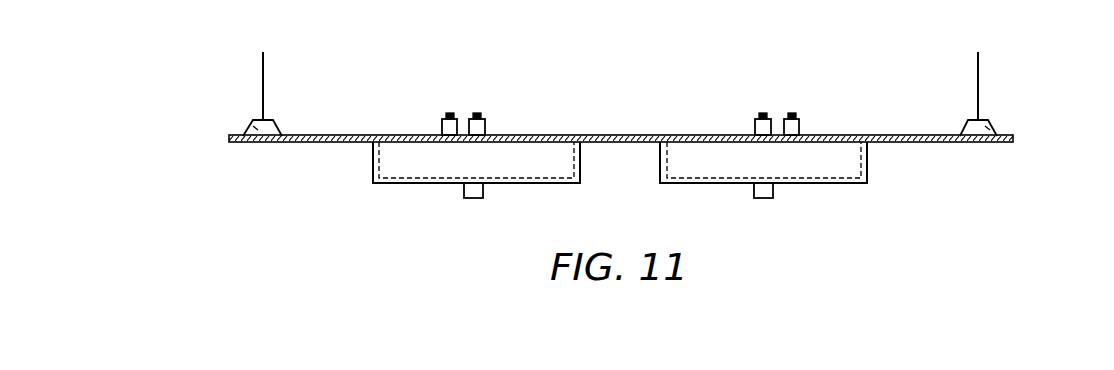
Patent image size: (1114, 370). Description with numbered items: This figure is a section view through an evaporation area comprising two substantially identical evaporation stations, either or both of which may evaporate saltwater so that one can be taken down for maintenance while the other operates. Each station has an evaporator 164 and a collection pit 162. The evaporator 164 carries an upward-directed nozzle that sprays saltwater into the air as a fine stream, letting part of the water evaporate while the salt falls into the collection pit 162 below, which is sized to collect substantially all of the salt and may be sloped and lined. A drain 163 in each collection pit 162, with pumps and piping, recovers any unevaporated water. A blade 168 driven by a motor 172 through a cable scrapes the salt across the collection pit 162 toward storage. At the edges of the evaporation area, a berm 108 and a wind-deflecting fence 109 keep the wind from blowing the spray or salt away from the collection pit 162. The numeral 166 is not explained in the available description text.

The berm 108 is at (252, 121).
The wind-deflecting fence 109 is at (263, 78).
The collection pit 162 is at (413, 187).
The drain 163 is at (470, 200).
The evaporator 164 is at (449, 112).
The circuit board plate 166 is at (650, 134).
The blade 168 is at (455, 173).
The motor 172 is at (482, 112).